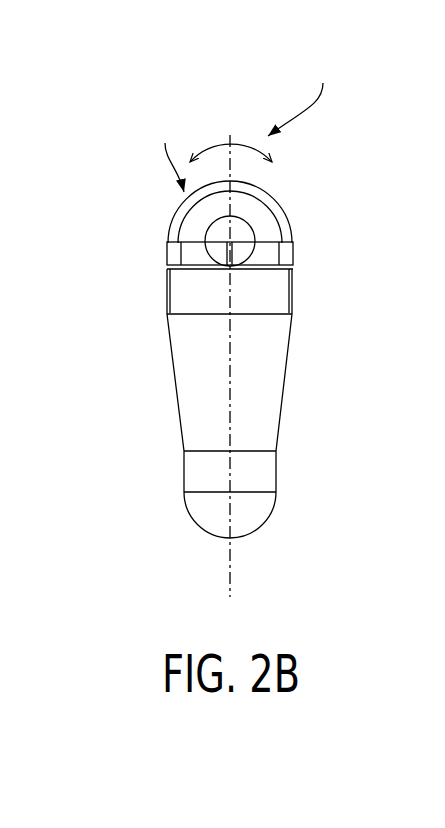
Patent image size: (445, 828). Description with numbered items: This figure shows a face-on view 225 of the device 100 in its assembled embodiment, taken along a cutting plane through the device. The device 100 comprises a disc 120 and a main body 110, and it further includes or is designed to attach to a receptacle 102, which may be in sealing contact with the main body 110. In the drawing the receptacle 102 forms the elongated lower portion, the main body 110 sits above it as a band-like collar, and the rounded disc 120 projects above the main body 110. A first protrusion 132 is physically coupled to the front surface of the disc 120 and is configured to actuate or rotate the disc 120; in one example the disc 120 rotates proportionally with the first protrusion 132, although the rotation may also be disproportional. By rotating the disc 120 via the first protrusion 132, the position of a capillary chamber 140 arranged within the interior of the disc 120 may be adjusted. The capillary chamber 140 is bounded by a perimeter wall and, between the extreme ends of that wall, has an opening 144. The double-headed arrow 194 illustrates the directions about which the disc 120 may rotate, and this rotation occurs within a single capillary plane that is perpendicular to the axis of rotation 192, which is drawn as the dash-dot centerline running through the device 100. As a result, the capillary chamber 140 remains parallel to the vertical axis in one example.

The device 100 is at (94, 129).
The receptacle 102 is at (287, 362).
The main body 110 is at (167, 258).
The disc 120 is at (176, 213).
The first protrusion 132 is at (250, 243).
The capillary chamber 140 is at (168, 150).
The opening 144 is at (273, 196).
The axis of rotation 192 is at (230, 563).
The double-headed arrow 194 is at (240, 146).
The face-on view 225 is at (304, 92).